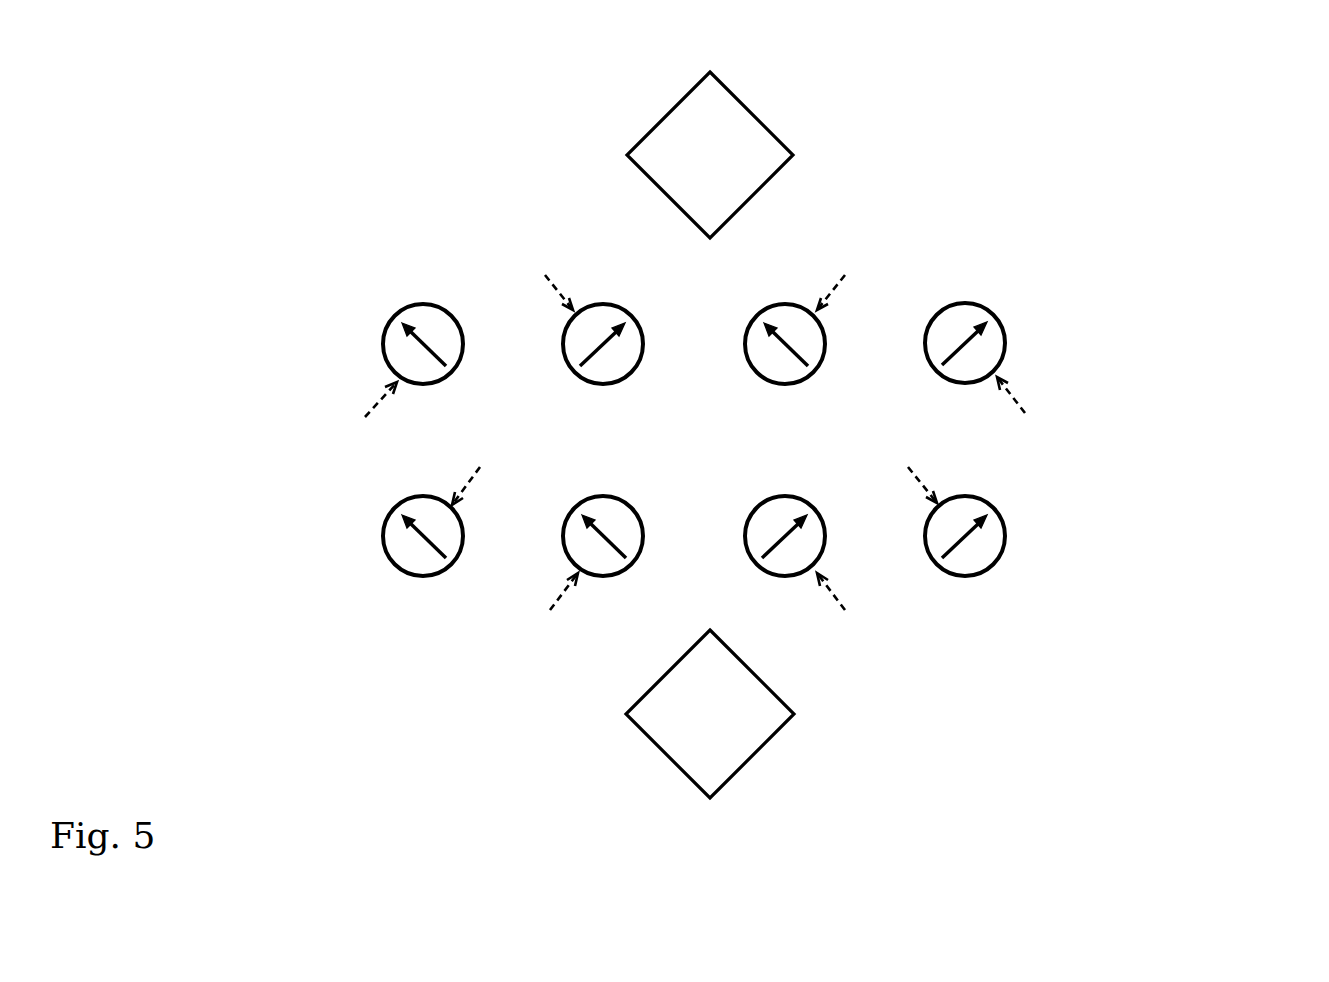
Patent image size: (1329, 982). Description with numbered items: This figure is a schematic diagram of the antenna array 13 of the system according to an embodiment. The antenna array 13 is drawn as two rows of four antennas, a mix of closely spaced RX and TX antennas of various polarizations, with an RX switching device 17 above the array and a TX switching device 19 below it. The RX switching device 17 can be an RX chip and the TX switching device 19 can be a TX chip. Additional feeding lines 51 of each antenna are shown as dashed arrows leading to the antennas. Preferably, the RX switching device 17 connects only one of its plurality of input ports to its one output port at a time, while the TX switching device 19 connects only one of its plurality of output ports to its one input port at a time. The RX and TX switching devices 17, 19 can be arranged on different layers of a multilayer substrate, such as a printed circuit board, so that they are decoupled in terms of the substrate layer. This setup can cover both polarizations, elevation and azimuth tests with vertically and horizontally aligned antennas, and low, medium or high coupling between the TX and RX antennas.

The antenna array 13 is at (1192, 410).
The RX switching device 17 is at (787, 142).
The TX switching device 19 is at (780, 730).
The feeding lines 51 is at (373, 407).